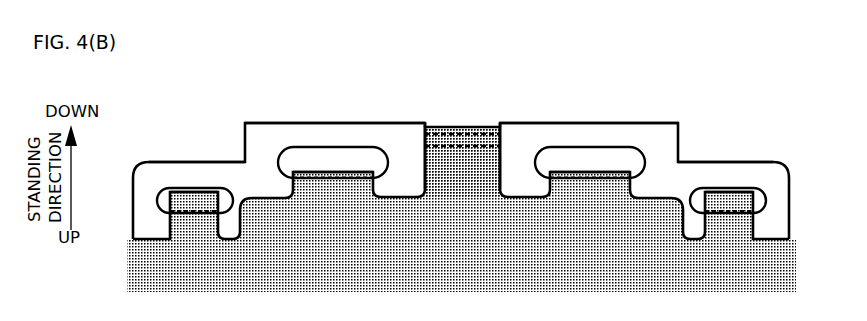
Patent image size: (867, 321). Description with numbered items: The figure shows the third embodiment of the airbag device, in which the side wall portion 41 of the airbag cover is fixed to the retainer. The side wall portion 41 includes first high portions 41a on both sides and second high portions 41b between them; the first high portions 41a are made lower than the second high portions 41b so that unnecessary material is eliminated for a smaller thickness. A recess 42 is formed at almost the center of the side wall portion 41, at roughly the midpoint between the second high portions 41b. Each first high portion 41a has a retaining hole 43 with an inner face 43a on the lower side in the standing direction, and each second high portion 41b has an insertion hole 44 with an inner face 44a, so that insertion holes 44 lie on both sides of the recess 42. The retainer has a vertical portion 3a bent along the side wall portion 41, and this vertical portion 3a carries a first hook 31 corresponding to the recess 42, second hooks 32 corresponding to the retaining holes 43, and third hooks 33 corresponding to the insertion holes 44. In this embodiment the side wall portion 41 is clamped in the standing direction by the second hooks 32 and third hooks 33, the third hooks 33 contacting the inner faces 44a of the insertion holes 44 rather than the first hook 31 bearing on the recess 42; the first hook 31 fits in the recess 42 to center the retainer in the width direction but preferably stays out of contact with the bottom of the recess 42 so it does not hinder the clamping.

The vertical portion 3a is at (478, 272).
The first hook 31 is at (478, 127).
The second hook 32 is at (172, 212).
The third hook 33 is at (300, 172).
The side wall portion 41 is at (684, 106).
The first high portion 41a is at (222, 161).
The second high portion 41b is at (266, 122).
The recess 42 is at (427, 124).
The retaining hole 43 is at (158, 193).
The inner face 43a is at (181, 191).
The insertion hole 44 is at (365, 148).
The inner face 44a is at (331, 177).